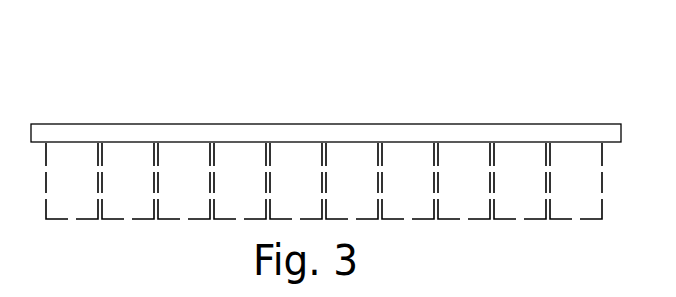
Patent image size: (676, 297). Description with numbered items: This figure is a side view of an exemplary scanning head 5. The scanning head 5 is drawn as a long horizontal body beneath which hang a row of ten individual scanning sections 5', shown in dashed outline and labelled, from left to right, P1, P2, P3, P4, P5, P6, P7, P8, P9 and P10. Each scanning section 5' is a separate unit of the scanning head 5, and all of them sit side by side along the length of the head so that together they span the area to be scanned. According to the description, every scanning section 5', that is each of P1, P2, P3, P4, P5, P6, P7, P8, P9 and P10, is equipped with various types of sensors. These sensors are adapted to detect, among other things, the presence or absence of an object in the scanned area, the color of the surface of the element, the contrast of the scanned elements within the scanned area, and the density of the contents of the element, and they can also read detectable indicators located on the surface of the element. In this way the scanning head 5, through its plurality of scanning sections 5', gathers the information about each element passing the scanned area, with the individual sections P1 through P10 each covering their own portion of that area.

The scanning head 5 is at (326, 81).
The scanning section 5' is at (324, 213).
The scanning section P1 is at (72, 180).
The scanning section P2 is at (128, 180).
The scanning section P3 is at (184, 180).
The scanning section P4 is at (240, 180).
The scanning section P5 is at (296, 180).
The scanning section P6 is at (352, 180).
The scanning section P7 is at (408, 180).
The scanning section P8 is at (464, 180).
The scanning section P9 is at (520, 180).
The scanning section P10 is at (576, 180).